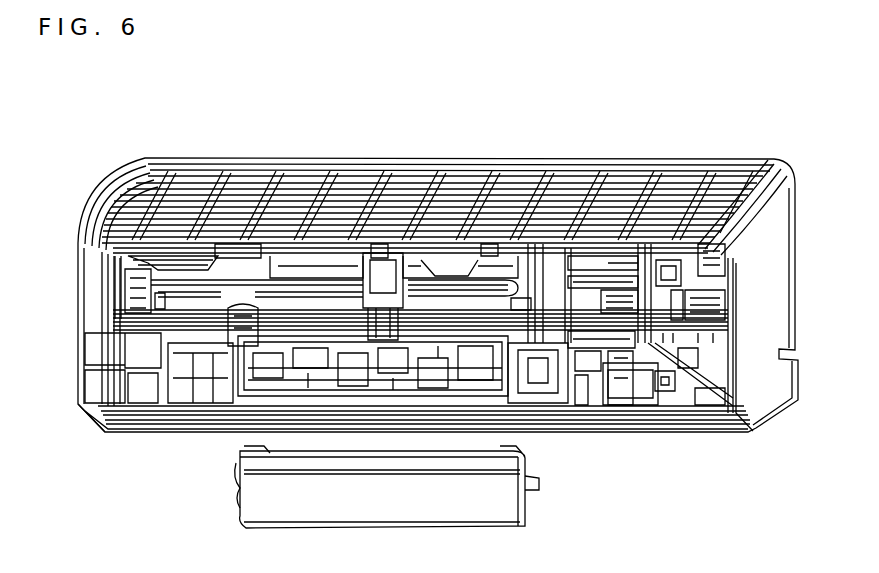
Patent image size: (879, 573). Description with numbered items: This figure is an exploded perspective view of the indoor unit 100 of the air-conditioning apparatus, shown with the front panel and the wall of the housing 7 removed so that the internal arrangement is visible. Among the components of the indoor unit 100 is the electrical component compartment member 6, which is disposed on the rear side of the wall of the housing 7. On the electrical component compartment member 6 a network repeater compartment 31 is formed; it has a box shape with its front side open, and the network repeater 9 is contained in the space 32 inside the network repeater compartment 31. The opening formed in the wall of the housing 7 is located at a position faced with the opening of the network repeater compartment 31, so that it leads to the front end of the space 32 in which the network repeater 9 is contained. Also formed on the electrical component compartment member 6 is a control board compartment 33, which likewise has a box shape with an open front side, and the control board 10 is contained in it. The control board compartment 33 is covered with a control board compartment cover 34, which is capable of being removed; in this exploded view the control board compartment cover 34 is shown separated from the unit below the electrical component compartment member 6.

The indoor unit 100 is at (132, 125).
The electrical component compartment member 6 is at (270, 328).
The control board compartment 33 is at (374, 328).
The space 32 is at (540, 328).
The network repeater compartment 31 is at (565, 328).
The housing 7 is at (772, 253).
The network repeater 9 is at (630, 392).
The control board 10 is at (533, 408).
The control board compartment cover 34 is at (262, 494).